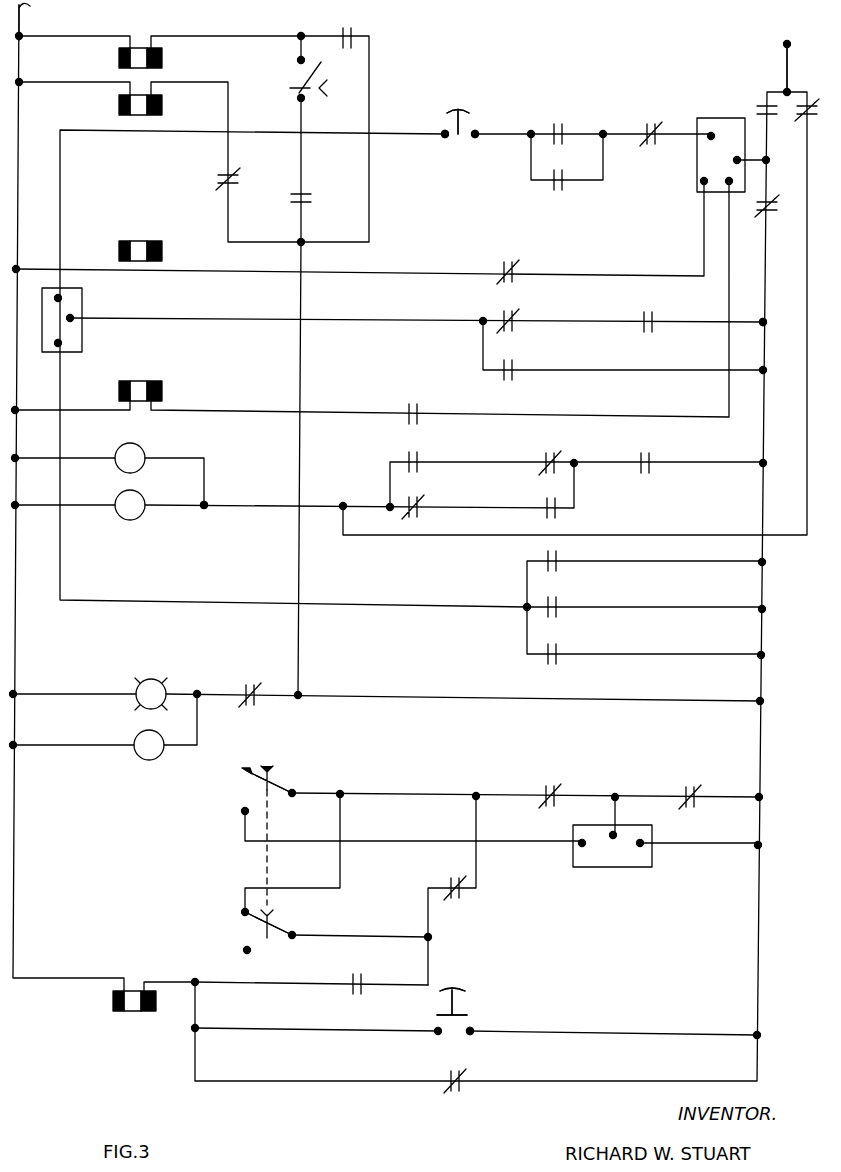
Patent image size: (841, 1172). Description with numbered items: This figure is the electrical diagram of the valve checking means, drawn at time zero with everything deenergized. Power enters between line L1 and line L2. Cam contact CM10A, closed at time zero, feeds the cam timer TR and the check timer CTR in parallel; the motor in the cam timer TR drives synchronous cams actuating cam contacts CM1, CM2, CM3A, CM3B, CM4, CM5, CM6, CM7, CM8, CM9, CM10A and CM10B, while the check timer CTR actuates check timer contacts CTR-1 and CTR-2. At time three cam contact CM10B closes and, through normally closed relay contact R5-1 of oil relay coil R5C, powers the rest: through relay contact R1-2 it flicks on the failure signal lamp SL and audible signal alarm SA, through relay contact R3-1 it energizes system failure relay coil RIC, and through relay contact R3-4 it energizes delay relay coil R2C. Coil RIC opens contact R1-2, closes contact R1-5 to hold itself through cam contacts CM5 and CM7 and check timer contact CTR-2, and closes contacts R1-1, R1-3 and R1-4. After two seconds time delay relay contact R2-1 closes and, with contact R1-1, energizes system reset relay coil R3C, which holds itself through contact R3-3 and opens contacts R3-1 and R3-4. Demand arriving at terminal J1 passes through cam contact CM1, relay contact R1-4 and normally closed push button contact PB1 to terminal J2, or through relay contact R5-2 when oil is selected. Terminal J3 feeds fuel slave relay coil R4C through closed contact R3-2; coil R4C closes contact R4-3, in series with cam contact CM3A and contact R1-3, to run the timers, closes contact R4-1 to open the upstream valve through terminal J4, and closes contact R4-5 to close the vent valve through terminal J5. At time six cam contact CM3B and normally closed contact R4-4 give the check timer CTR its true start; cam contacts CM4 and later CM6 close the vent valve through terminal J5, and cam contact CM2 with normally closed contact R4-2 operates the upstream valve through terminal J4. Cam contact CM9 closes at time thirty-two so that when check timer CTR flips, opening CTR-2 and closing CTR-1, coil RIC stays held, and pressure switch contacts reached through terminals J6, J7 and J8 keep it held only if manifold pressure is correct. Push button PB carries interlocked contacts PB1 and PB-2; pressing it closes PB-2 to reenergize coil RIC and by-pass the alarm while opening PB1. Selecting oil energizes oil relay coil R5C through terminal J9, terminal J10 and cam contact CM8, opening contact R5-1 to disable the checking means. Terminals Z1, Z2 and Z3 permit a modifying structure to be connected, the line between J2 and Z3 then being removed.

The line L1 is at (787, 50).
The line L2 is at (35, 22).
The system reset relay coil R3C is at (163, 60).
The delay relay coil R2C is at (163, 108).
The oil relay coil R5C is at (162, 249).
The fuel slave relay coil R4C is at (162, 392).
The system failure relay coil RIC is at (112, 1003).
The relay contact R3-3 is at (348, 27).
The time delay relay contact R2-1 is at (296, 88).
The relay contact R3-4 is at (242, 182).
The relay contact R1-1 is at (313, 203).
The terminal Z3 is at (440, 134).
The push button PB is at (474, 101).
The push button contact PB1 is at (478, 132).
The relay contact R1-4 is at (566, 120).
The relay contact R5-2 is at (566, 196).
The cam contact CM1 is at (654, 120).
The terminal J1 is at (711, 132).
The terminal J9 is at (736, 160).
The terminal J10 is at (702, 183).
The terminal J3 is at (731, 184).
The cam contact CM10A is at (805, 104).
The cam contact CM10B is at (758, 112).
The relay contact R5-1 is at (778, 206).
The cam contact CM8 is at (518, 262).
The terminal J2 is at (56, 298).
The terminal J4 is at (72, 318).
The terminal J5 is at (60, 343).
The relay contact R4-2 is at (506, 310).
The cam contact CM2 is at (654, 310).
The terminal Z1 is at (764, 321).
The relay contact R4-1 is at (508, 360).
The relay contact R3-2 is at (414, 408).
The relay contact R4-3 is at (414, 454).
The cam contact CM3A is at (556, 456).
The relay contact R1-3 is at (648, 456).
The relay contact R4-4 is at (414, 500).
The cam contact CM3B is at (560, 518).
The check timer CTR is at (146, 450).
The cam timer TR is at (144, 496).
The terminal Z2 is at (205, 508).
The relay contact R4-5 is at (556, 552).
The cam contact CM4 is at (556, 598).
The cam contact CM6 is at (556, 644).
The failure signal lamp SL is at (164, 682).
The relay contact R1-2 is at (252, 685).
The audible signal alarm SA is at (155, 760).
The check timer contact CTR-1 is at (244, 811).
The check timer contact CTR-2 is at (244, 912).
The cam contact CM7 is at (546, 786).
The cam contact CM5 is at (682, 786).
The cam contact CM9 is at (448, 886).
The terminal J8 is at (582, 846).
The terminal J7 is at (613, 838).
The terminal J6 is at (640, 846).
The relay contact R1-5 is at (361, 971).
The push button contact PB-2 is at (470, 1034).
The relay contact R3-1 is at (460, 1074).